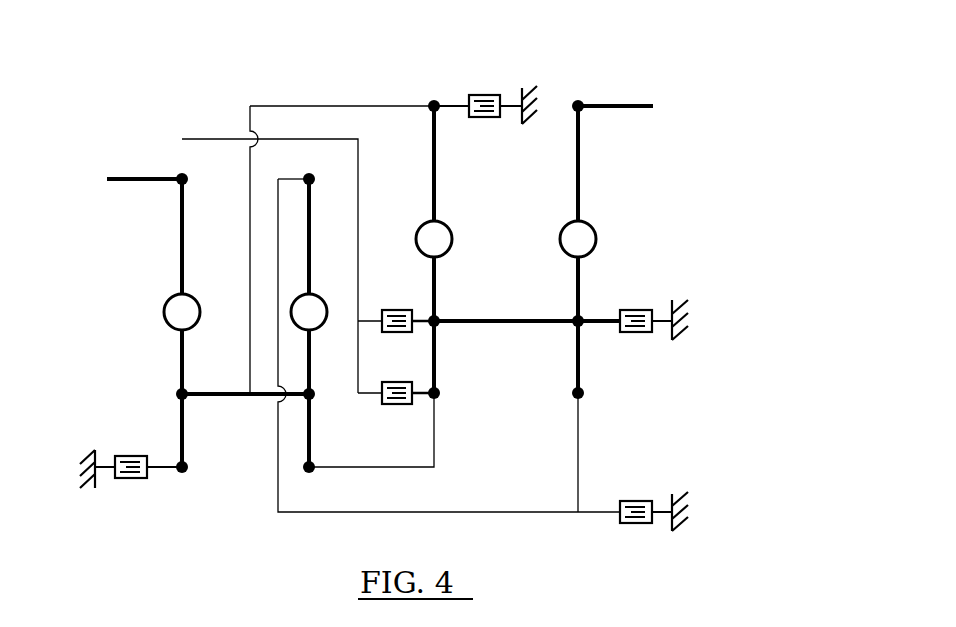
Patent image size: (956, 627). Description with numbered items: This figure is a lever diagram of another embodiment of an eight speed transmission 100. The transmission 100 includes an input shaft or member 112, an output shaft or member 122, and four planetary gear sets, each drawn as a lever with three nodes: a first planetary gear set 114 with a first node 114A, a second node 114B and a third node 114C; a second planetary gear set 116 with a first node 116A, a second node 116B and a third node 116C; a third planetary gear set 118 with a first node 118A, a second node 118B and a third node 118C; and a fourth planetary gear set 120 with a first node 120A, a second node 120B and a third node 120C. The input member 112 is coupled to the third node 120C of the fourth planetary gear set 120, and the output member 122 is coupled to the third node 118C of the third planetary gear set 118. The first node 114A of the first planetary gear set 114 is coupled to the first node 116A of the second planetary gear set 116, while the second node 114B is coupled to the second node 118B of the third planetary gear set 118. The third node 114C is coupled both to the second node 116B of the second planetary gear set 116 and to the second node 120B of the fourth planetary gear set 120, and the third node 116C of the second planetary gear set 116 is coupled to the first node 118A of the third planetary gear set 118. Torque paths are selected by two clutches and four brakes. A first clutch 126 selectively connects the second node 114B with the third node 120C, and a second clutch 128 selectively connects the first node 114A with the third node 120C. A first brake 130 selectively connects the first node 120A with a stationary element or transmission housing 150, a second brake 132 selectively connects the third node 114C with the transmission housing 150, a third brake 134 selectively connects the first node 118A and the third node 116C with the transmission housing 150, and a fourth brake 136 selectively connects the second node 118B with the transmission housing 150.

The eight speed transmission 100 is at (668, 60).
The input shaft or member 112 is at (120, 185).
The first planetary gear set 114 is at (473, 425).
The first node of first planetary gear set 114A is at (439, 390).
The second node of first planetary gear set 114B is at (439, 317).
The third node of first planetary gear set 114C is at (435, 100).
The second planetary gear set 116 is at (334, 448).
The first node of second planetary gear set 116A is at (305, 471).
The second node of second planetary gear set 116B is at (305, 398).
The third node of second planetary gear set 116C is at (311, 172).
The third planetary gear set 118 is at (541, 346).
The first node of third planetary gear set 118A is at (584, 395).
The second node of third planetary gear set 118B is at (583, 317).
The third node of third planetary gear set 118C is at (579, 100).
The fourth planetary gear set 120 is at (122, 350).
The first node of fourth planetary gear set 120A is at (182, 473).
The second node of fourth planetary gear set 120B is at (177, 392).
The third node of fourth planetary gear set 120C is at (178, 174).
The output shaft or member 122 is at (648, 110).
The first clutch 126 is at (394, 306).
The second clutch 128 is at (396, 406).
The first brake 130 is at (128, 454).
The second brake 132 is at (484, 119).
The third brake 134 is at (640, 525).
The fourth brake 136 is at (640, 334).
The transmission housing 150 is at (528, 86).